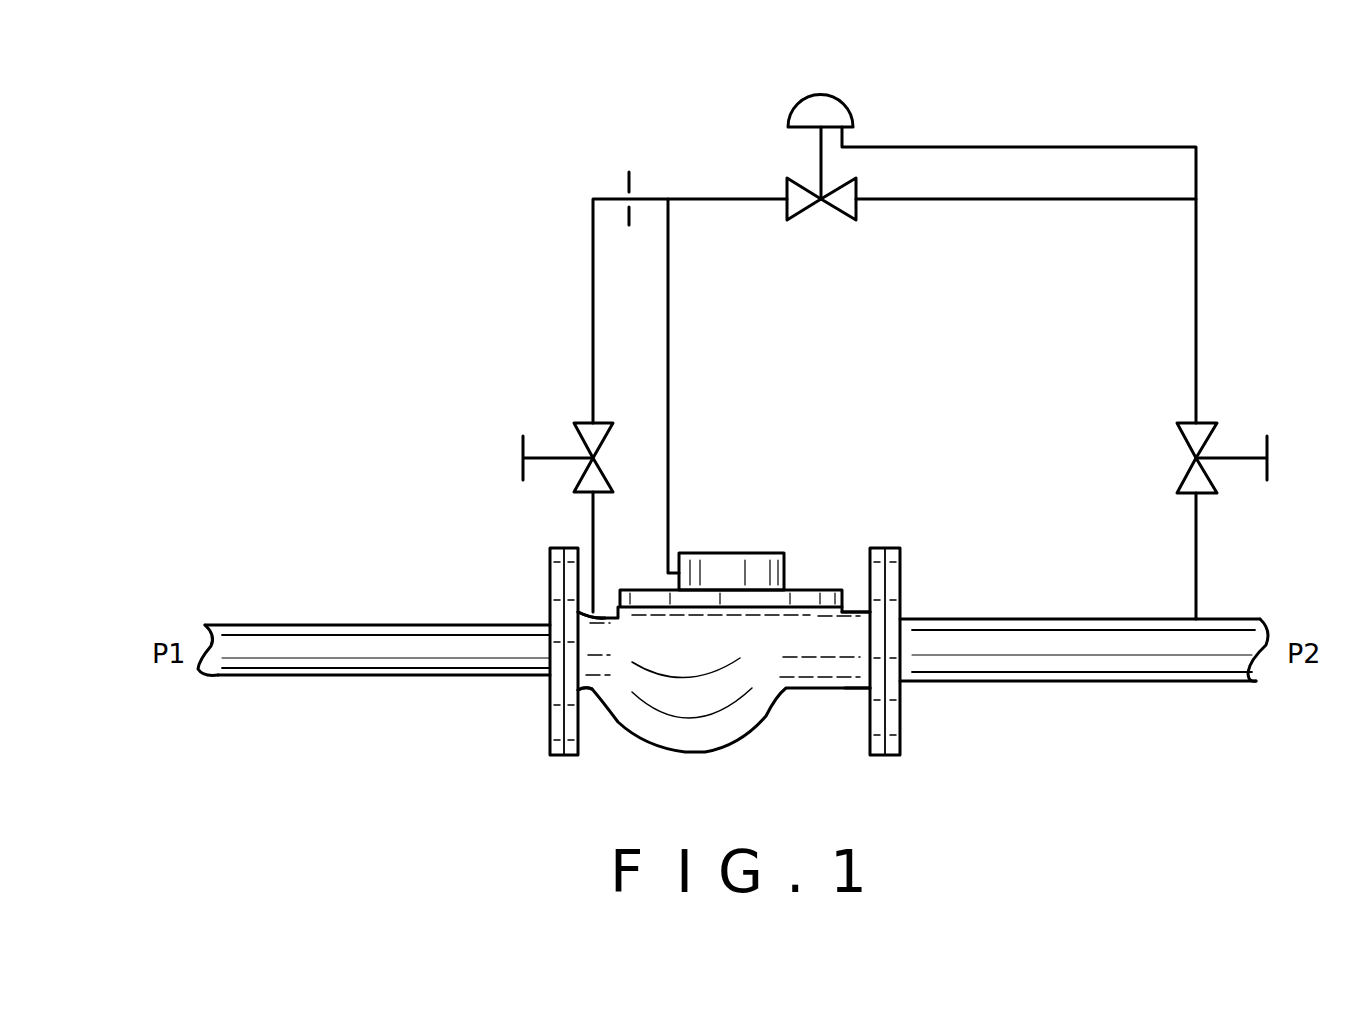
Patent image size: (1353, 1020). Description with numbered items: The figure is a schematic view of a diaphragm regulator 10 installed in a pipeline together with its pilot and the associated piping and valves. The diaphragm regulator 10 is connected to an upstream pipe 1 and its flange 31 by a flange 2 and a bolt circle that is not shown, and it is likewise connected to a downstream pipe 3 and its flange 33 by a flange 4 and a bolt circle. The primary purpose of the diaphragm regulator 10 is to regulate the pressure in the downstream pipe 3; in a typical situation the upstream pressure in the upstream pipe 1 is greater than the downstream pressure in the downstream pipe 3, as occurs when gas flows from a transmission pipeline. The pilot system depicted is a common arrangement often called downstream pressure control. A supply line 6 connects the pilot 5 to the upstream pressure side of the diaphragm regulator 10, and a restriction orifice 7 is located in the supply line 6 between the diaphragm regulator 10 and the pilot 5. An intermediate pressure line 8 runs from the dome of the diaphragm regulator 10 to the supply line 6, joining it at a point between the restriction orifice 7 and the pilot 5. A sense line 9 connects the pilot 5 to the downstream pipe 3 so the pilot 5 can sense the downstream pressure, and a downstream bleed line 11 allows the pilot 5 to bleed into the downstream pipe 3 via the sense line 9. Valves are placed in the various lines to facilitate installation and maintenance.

The upstream pipe 1 is at (308, 676).
The flange 2 is at (572, 717).
The downstream pipe 3 is at (1152, 681).
The flange 4 is at (875, 717).
The pilot 5 is at (818, 95).
The supply line 6 is at (742, 199).
The restriction orifice 7 is at (628, 189).
The intermediate pressure line 8 is at (668, 351).
The sense line 9 is at (1077, 147).
The diaphragm regulator 10 is at (780, 755).
The downstream bleed line 11 is at (1050, 200).
The flange 31 is at (550, 693).
The flange 33 is at (890, 704).